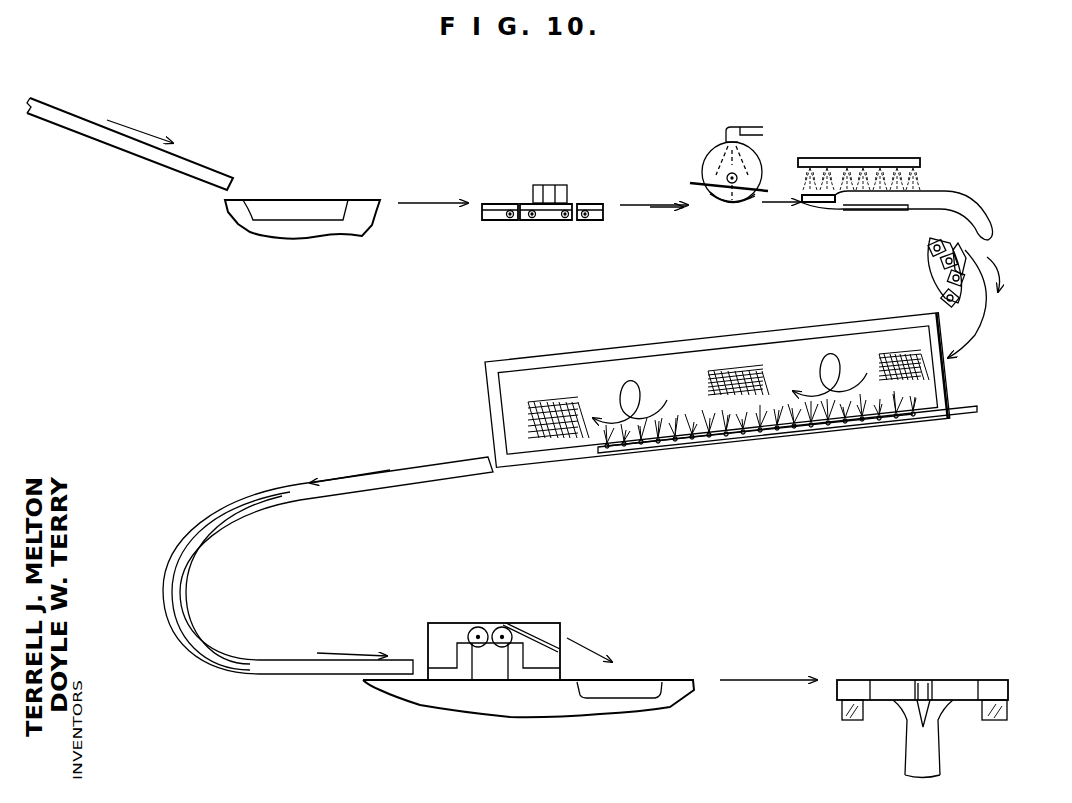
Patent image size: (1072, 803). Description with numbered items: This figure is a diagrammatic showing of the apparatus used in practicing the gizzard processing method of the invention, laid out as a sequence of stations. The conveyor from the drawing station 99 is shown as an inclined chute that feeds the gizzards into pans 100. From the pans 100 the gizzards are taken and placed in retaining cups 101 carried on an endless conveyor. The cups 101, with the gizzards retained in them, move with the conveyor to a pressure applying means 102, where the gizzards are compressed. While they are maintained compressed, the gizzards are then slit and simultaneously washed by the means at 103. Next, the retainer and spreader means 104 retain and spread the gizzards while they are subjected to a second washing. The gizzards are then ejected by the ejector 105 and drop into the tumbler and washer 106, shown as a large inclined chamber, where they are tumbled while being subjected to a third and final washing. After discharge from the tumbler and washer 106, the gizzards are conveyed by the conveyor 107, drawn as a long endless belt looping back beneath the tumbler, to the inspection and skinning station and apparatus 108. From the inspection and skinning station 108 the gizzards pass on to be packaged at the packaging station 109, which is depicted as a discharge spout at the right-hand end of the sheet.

The conveyor from the drawing station 99 is at (142, 154).
The pans 100 is at (302, 208).
The retaining cups 101 is at (522, 204).
The pressure applying means 102 is at (696, 183).
The slitting and washing means 103 is at (732, 200).
The retainer and spreader means 104 is at (800, 179).
The ejector 105 is at (989, 258).
The tumbler and washer 106 is at (772, 438).
The conveyor to inspection station 107 is at (322, 497).
The inspection and skinning station and apparatus 108 is at (465, 623).
The packaging station 109 is at (865, 680).